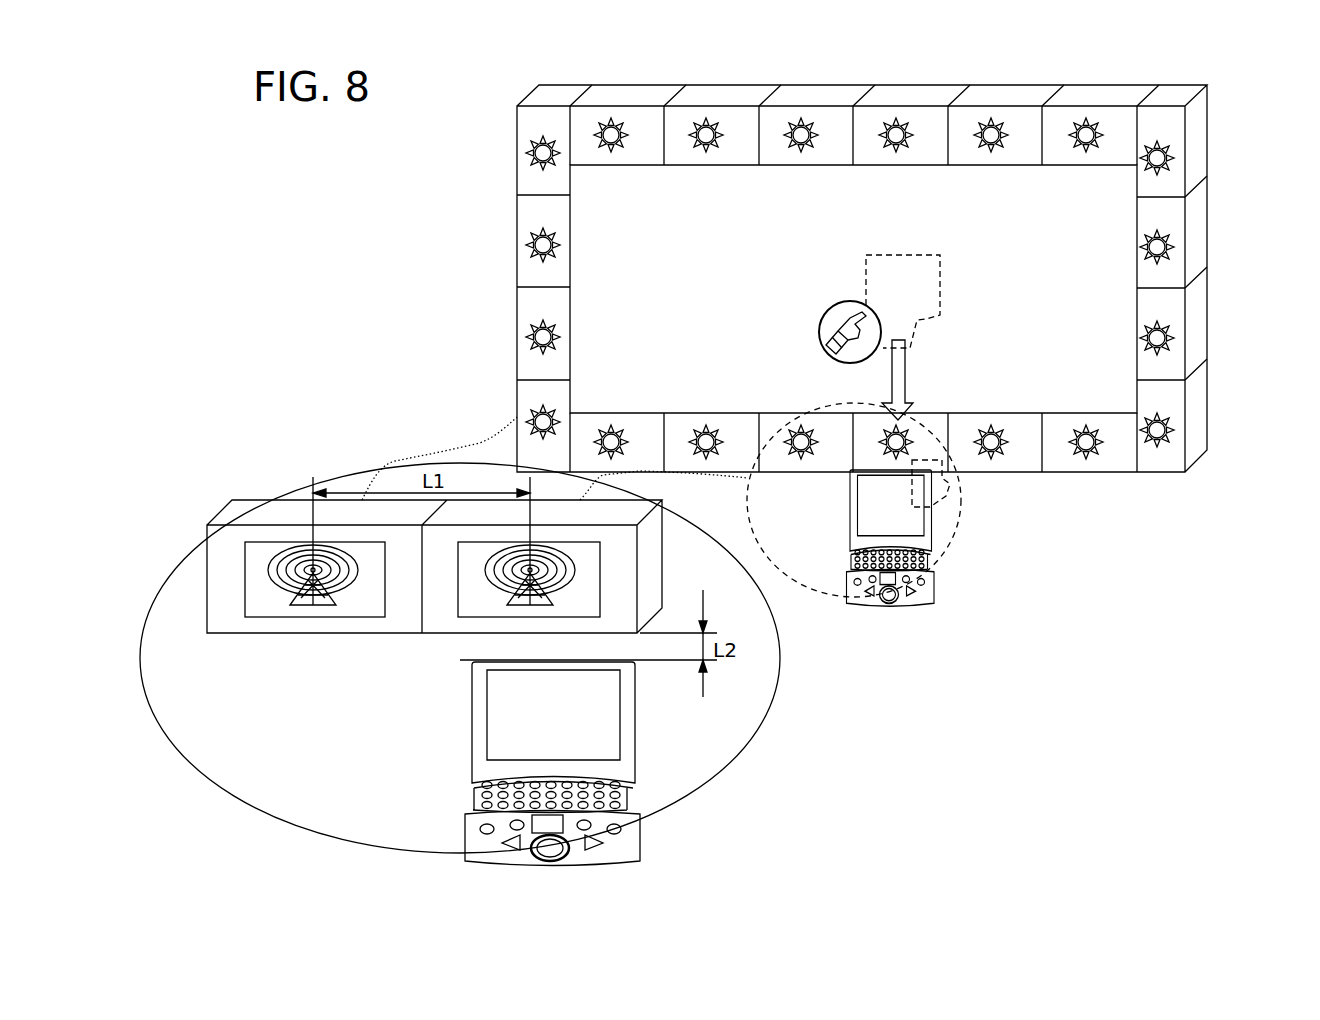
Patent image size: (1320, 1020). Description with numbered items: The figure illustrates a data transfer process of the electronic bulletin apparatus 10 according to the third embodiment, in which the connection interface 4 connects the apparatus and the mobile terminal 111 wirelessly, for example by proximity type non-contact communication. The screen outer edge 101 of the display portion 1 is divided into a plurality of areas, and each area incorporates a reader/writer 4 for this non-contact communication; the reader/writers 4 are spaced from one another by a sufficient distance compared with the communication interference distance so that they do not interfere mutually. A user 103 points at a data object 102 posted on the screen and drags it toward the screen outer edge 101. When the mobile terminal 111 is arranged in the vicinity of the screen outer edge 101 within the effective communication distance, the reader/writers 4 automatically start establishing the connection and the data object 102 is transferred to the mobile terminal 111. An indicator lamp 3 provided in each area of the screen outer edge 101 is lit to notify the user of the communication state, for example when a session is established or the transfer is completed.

The electronic bulletin apparatus 10 is at (1104, 75).
The display portion 1 is at (1118, 206).
The screen outer edge 101 is at (1138, 318).
The indicator lamp 3 is at (595, 134).
The data object 102 is at (940, 275).
The user 103 is at (820, 331).
The connection interface 4 is at (460, 633).
The mobile terminal 111 is at (640, 836).